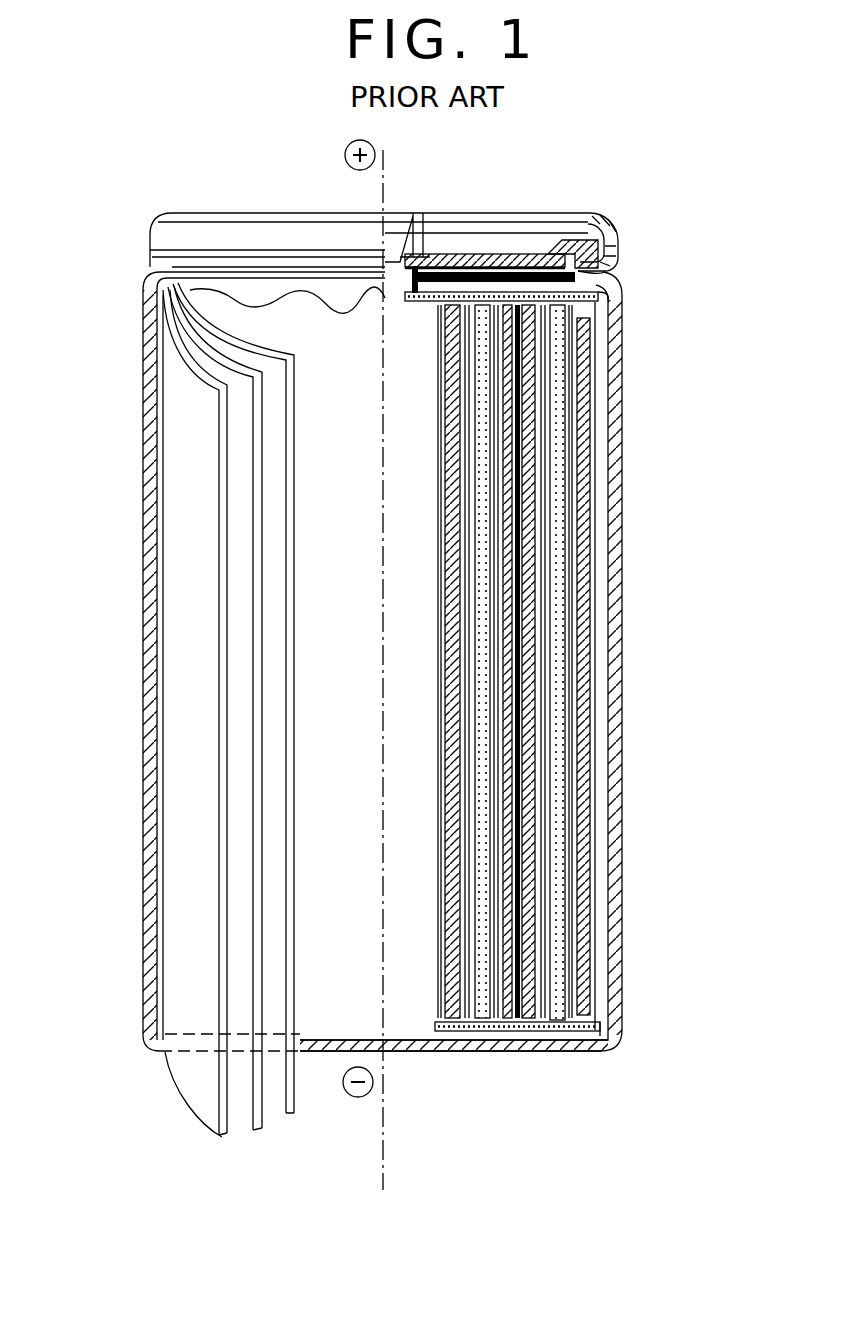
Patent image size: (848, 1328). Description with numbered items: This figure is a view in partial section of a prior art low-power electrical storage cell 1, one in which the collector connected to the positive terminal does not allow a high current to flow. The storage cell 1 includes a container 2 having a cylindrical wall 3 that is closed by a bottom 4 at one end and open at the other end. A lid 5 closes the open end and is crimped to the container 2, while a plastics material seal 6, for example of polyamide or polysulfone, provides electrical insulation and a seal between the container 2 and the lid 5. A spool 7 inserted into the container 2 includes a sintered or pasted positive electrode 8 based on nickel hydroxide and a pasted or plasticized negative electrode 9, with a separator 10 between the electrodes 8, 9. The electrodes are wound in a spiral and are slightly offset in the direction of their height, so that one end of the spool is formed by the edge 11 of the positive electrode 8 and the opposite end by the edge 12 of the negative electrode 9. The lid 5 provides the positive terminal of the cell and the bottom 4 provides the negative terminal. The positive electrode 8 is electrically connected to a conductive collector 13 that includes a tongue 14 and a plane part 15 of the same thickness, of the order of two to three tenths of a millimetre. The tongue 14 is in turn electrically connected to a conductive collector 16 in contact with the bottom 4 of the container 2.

The storage cell 1 is at (607, 205).
The container 2 is at (638, 817).
The cylindrical wall 3 is at (150, 748).
The bottom 4 is at (438, 1052).
The lid 5 is at (450, 254).
The seal 6 is at (610, 250).
The spool 7 is at (611, 700).
The positive electrode 8 is at (275, 605).
The negative electrode 9 is at (195, 453).
The separator 10 is at (242, 505).
The edge of the positive electrode 11 is at (240, 343).
The edge of the negative electrode 12 is at (192, 1115).
The conductive collector 13 is at (418, 215).
The tongue 14 is at (490, 240).
The plane part 15 is at (590, 305).
The conductive collector 16 is at (518, 1050).